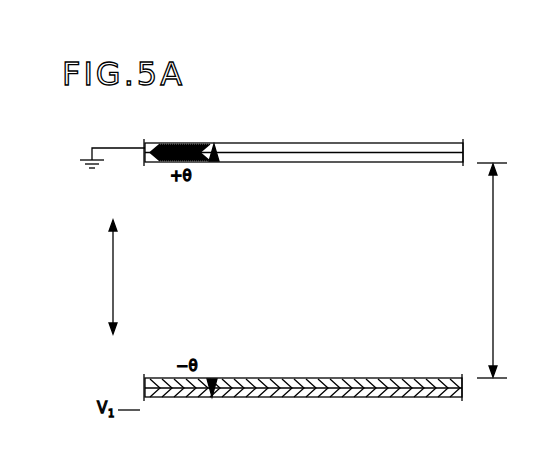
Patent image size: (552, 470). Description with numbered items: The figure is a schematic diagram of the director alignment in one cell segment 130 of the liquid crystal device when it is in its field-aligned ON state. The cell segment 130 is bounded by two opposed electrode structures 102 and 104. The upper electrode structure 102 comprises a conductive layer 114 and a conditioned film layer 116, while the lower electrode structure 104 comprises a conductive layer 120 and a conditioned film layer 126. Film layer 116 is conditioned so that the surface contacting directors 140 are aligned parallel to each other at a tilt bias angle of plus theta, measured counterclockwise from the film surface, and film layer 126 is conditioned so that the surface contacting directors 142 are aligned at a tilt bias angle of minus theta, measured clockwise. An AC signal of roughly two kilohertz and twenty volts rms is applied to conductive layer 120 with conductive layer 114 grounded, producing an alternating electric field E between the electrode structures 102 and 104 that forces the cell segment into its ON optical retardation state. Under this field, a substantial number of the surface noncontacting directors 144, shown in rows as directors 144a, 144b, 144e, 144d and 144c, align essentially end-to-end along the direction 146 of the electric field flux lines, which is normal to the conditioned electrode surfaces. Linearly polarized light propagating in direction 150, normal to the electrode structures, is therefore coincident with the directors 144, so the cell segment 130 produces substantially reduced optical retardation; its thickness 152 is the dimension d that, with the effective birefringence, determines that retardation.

The electrode structure 102 is at (201, 131).
The electrode structure 104 is at (226, 398).
The conductive layer 114 is at (155, 142).
The film layer 116 is at (155, 163).
The conductive layer 120 is at (145, 394).
The film layer 126 is at (150, 378).
The cell segment 130 is at (306, 94).
The surface contacting directors 140 is at (224, 174).
The surface contacting directors 142 is at (228, 365).
The surface noncontacting directors 144 is at (210, 232).
The surface noncontacting director 144a is at (224, 188).
The surface noncontacting director 144b is at (224, 218).
The surface noncontacting director 144c is at (224, 330).
The surface noncontacting director 144d is at (224, 295).
The surface noncontacting director 144e is at (224, 255).
The direction of electric field flux lines 146 is at (116, 282).
The direction of light propagation 150 is at (313, 108).
The thickness 152 is at (494, 281).